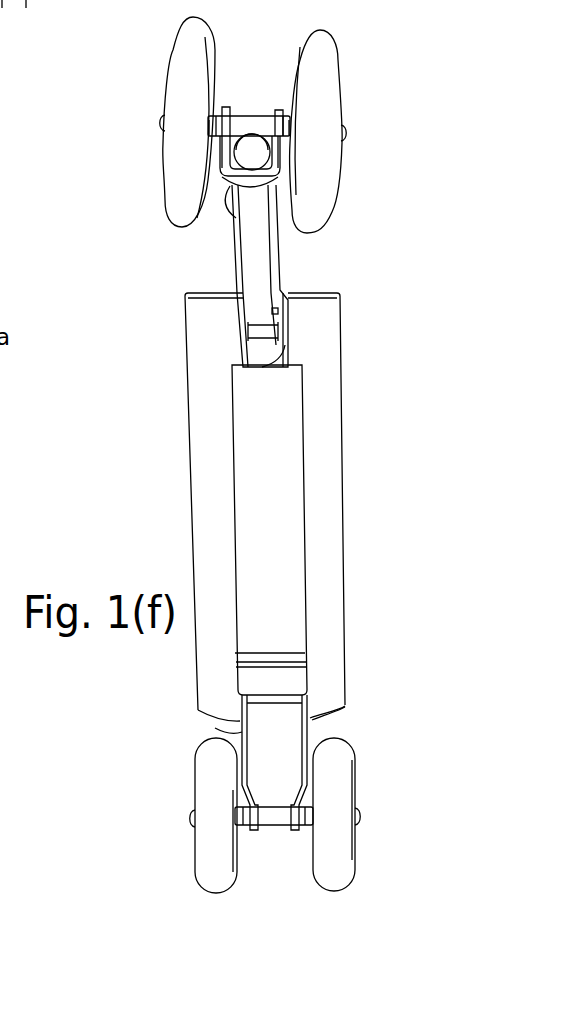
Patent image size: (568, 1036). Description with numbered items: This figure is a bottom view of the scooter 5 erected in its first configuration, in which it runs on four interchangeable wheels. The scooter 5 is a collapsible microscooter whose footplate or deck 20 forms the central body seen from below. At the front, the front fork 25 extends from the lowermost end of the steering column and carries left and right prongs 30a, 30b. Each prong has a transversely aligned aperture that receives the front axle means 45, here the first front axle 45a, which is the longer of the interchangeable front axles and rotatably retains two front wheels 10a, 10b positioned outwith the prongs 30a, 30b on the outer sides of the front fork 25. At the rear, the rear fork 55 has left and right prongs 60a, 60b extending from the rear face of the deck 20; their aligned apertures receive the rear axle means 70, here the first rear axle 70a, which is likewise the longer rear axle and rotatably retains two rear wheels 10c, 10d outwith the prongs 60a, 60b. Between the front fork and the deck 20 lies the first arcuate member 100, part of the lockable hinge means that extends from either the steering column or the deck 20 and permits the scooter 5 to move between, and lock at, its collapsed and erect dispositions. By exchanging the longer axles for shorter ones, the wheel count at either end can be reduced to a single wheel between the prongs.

The scooter 5 is at (352, 413).
The front wheel 10a is at (317, 193).
The front wheel 10b is at (177, 192).
The rear wheel 10c is at (337, 787).
The rear wheel 10d is at (205, 787).
The footplate or deck 20 is at (286, 519).
The front fork 25 is at (227, 172).
The left prong of front fork 30a is at (283, 110).
The right prong of front fork 30b is at (228, 107).
The front axle means 45 is at (255, 90).
The first front axle 45a is at (250, 123).
The rear fork 55 is at (308, 737).
The left prong of rear fork 60a is at (345, 707).
The right prong of rear fork 60b is at (215, 728).
The rear axle means 70 is at (276, 860).
The first rear axle 70a is at (270, 816).
The first arcuate member 100 is at (278, 257).